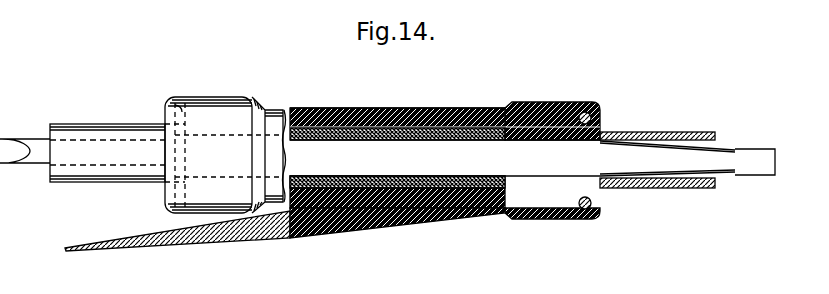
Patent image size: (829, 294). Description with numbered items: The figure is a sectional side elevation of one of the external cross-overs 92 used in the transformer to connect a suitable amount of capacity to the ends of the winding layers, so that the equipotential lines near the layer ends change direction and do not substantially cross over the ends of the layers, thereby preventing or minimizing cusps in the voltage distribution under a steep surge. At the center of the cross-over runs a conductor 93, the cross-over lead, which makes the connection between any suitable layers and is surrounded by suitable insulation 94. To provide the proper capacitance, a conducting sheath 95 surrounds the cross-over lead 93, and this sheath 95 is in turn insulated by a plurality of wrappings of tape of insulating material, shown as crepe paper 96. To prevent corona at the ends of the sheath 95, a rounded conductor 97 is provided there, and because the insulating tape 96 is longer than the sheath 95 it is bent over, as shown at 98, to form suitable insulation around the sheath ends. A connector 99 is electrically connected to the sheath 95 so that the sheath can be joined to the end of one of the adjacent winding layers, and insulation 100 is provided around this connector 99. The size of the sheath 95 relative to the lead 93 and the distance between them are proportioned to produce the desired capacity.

The external cross-over 92 is at (473, 95).
The conductor 93 is at (728, 149).
The insulation 94 is at (659, 132).
The conducting sheath 95 is at (386, 109).
The crepe paper insulating tape 96 is at (315, 109).
The rounded conductor 97 is at (176, 106).
The bent-over tape portion 98 is at (217, 98).
The connector 99 is at (126, 249).
The insulation 100 is at (314, 238).